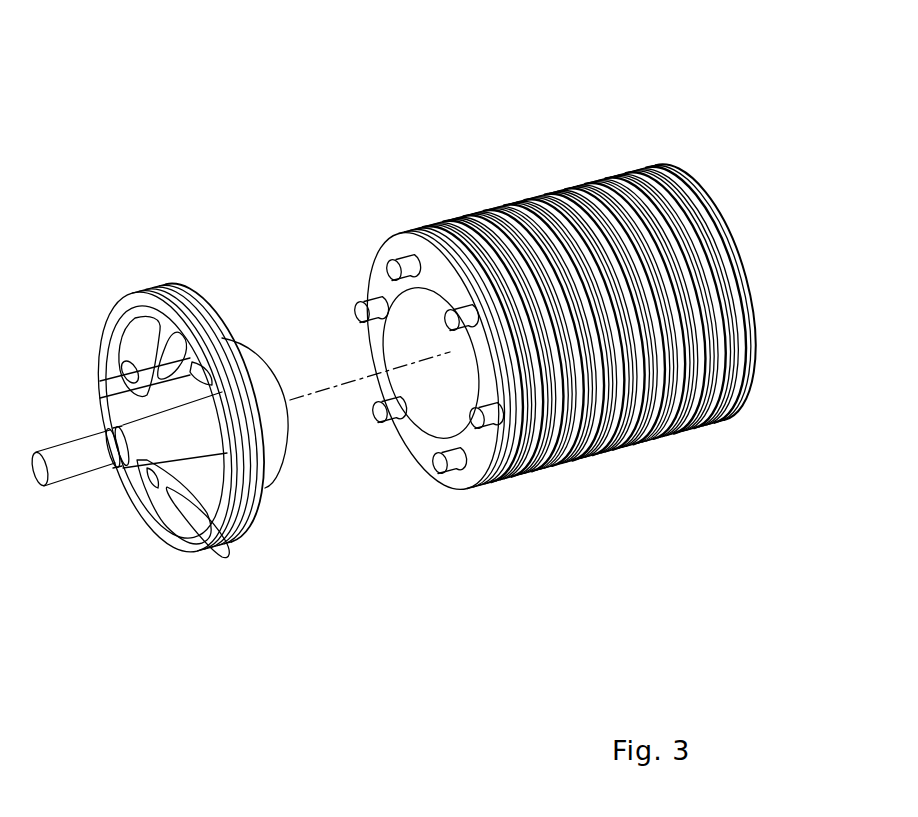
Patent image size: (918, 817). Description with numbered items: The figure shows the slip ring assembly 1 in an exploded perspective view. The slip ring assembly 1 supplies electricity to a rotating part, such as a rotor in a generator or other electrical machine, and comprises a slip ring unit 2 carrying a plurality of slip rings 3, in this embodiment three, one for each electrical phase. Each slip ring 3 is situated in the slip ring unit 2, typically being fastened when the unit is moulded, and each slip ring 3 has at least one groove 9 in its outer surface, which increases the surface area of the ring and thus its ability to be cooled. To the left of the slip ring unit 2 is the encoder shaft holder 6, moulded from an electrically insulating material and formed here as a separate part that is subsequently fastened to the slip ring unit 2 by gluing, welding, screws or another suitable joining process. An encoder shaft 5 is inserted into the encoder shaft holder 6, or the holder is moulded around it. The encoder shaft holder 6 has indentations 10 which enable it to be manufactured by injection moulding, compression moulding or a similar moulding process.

The slip ring assembly 1 is at (758, 121).
The slip ring unit 2 is at (290, 115).
The slip ring 3 is at (630, 182).
The encoder shaft 5 is at (80, 457).
The encoder shaft holder 6 is at (200, 470).
The groove 9 is at (683, 436).
The indentation 10 is at (115, 343).